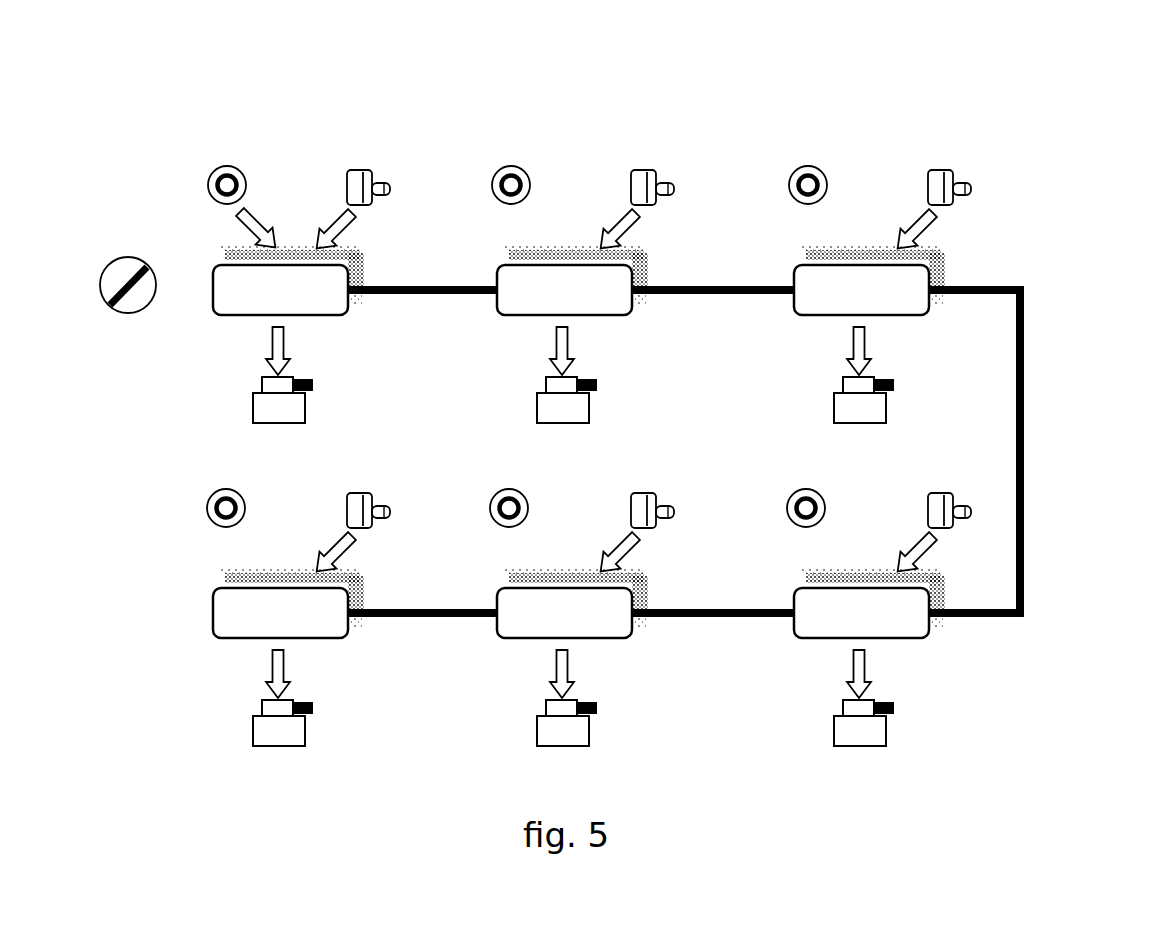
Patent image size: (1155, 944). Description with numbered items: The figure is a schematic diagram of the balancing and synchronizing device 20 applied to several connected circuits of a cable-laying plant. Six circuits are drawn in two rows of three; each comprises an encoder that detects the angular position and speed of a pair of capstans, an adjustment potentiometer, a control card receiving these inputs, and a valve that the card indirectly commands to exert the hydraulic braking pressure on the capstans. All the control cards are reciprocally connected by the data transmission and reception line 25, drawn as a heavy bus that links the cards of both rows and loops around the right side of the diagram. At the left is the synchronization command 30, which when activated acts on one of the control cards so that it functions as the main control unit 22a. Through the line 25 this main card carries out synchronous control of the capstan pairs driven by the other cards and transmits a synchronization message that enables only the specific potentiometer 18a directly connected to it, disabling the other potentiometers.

The specific potentiometer 18a is at (231, 172).
The balancing and synchronizing device 20 is at (1066, 162).
The main control unit 22a is at (323, 295).
The data transmission and reception line 25 is at (428, 287).
The synchronization command 30 is at (112, 275).